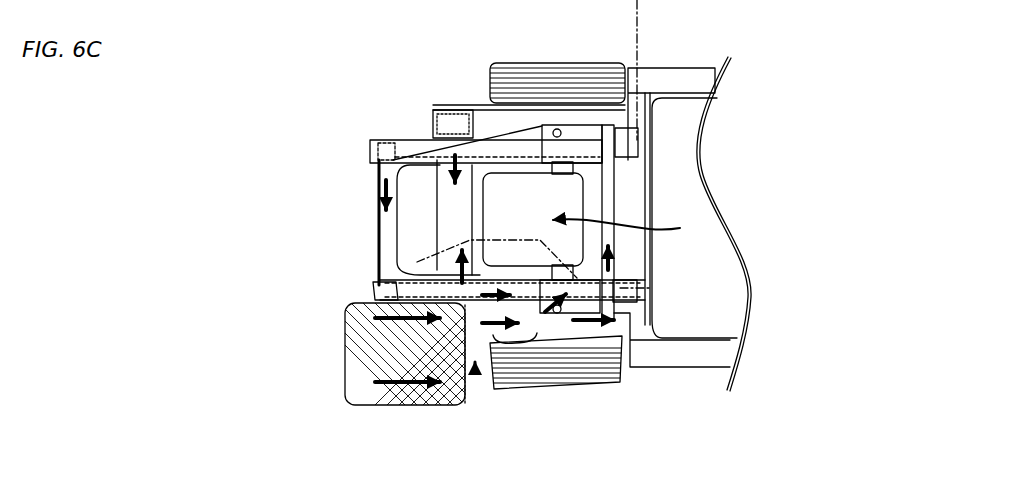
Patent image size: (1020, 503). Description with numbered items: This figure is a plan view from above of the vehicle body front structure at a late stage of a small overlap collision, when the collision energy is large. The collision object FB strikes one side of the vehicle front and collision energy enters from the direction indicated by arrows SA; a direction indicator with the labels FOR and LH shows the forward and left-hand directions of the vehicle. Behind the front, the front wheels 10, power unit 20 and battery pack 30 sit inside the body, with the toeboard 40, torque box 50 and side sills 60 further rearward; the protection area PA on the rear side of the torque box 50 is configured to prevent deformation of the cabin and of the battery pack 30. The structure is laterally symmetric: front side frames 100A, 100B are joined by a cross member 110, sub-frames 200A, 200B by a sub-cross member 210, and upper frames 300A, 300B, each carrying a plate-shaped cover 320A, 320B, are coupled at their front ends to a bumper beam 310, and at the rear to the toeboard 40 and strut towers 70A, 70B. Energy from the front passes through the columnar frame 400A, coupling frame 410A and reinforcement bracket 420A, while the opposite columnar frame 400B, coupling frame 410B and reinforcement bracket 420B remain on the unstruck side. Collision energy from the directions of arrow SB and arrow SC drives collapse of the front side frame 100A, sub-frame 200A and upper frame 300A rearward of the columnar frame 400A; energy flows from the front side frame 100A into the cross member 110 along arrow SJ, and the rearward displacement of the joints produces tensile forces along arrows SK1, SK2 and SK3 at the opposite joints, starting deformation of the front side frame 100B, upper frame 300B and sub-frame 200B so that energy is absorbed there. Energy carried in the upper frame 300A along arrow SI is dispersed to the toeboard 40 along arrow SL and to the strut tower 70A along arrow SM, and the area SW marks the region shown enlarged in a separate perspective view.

The front wheels 10 is at (587, 118).
The power unit 20 is at (620, 230).
The battery pack 30 is at (702, 245).
The toeboard 40 is at (620, 205).
The torque box 50 is at (630, 178).
The side sills 60 is at (680, 92).
The strut tower 70A is at (650, 273).
The strut tower 70B is at (620, 127).
The front side frame 100A is at (528, 323).
The front side frame 100B is at (487, 153).
The cross member 110 is at (380, 168).
The sub-frame 200A is at (575, 283).
The sub-frame 200B is at (512, 157).
The sub-cross member 210 is at (377, 272).
The upper frame 300A is at (587, 333).
The upper frame 300B is at (590, 113).
The bumper beam 310 is at (388, 238).
The cover 320A is at (581, 221).
The cover 320B is at (467, 130).
The columnar frame 400A is at (373, 287).
The columnar frame 400B is at (425, 128).
The coupling frame 410A is at (463, 337).
The coupling frame 410B is at (450, 107).
The reinforcement bracket 420A is at (507, 303).
The reinforcement bracket 420B is at (437, 110).
The arrows SA is at (370, 317).
The arrow SB is at (497, 259).
The arrow SC is at (500, 337).
The arrow SI is at (580, 330).
The arrow SJ is at (418, 227).
The arrow SK1 is at (460, 213).
The arrow SK2 is at (372, 165).
The arrow SK3 is at (377, 202).
The arrow SL is at (628, 258).
The arrow SM is at (648, 308).
The area SW is at (478, 378).
The collision object FB is at (353, 387).
The protection area PA is at (645, 22).
The left-hand direction LH is at (890, 407).
The forward direction FOR is at (890, 407).